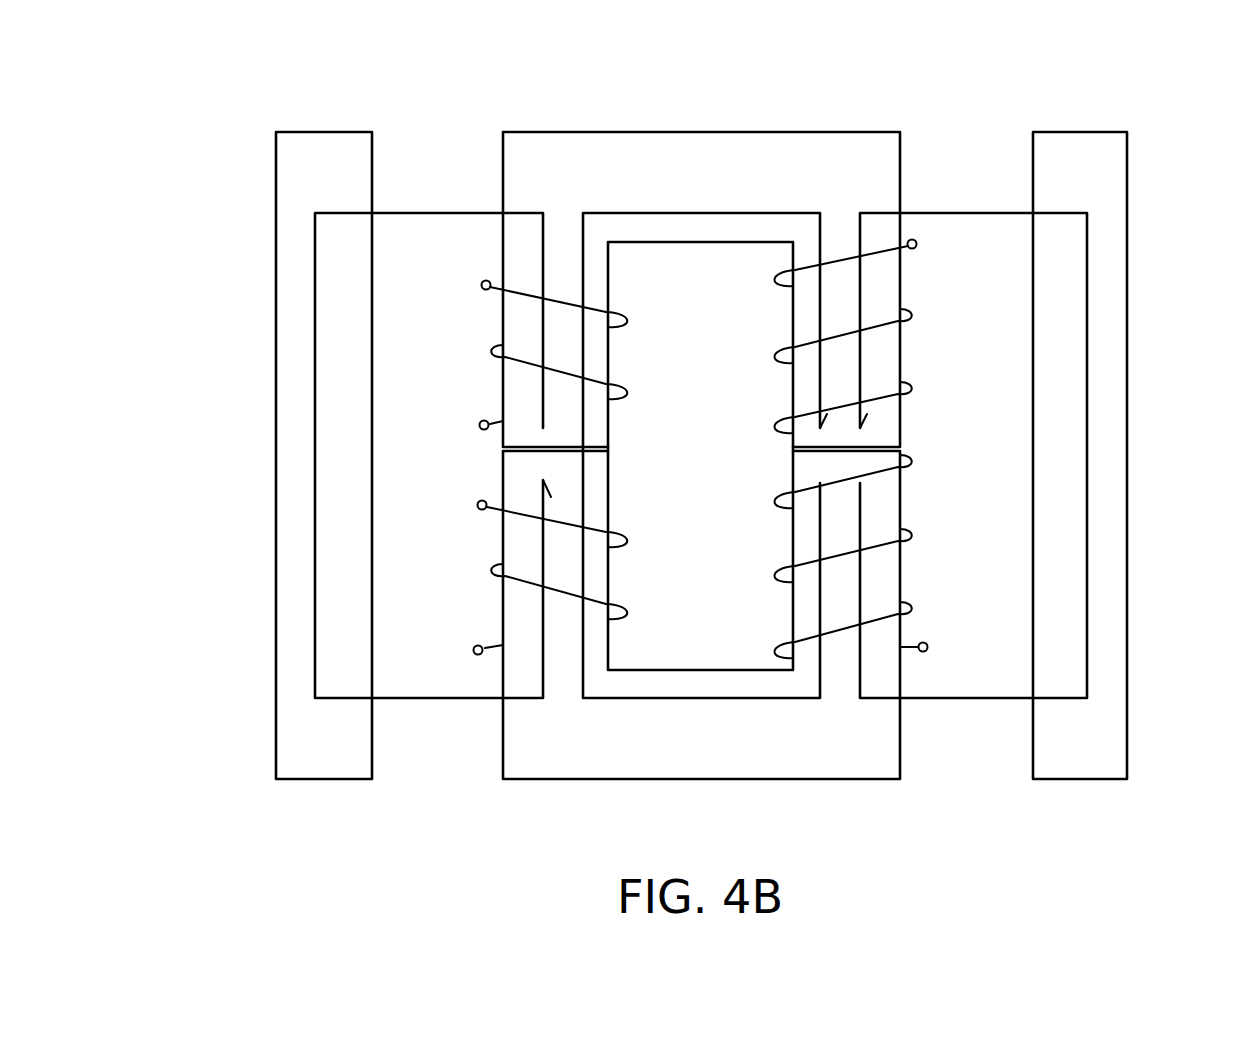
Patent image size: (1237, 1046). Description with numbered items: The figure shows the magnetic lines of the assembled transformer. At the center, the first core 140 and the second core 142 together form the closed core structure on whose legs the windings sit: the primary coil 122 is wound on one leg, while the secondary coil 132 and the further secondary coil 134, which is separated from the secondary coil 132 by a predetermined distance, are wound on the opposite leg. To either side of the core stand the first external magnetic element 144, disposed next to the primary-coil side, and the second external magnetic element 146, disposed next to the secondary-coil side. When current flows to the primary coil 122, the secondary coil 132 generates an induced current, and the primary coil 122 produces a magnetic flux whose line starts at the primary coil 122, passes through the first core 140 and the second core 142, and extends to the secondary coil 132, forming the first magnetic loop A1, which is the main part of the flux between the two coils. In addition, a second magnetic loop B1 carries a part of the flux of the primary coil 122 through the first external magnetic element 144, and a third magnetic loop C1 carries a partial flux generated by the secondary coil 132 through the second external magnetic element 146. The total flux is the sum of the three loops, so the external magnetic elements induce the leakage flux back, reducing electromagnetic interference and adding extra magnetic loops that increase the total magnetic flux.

The primary coil 122 is at (918, 244).
The secondary coil 132 is at (481, 283).
The secondary coil 134 is at (478, 505).
The first core 140 is at (700, 743).
The second core 142 is at (700, 160).
The first external magnetic element 144 is at (1085, 753).
The second external magnetic element 146 is at (315, 742).
The first magnetic loop A1 is at (793, 248).
The second magnetic loop B1 is at (1087, 278).
The third magnetic loop C1 is at (315, 275).